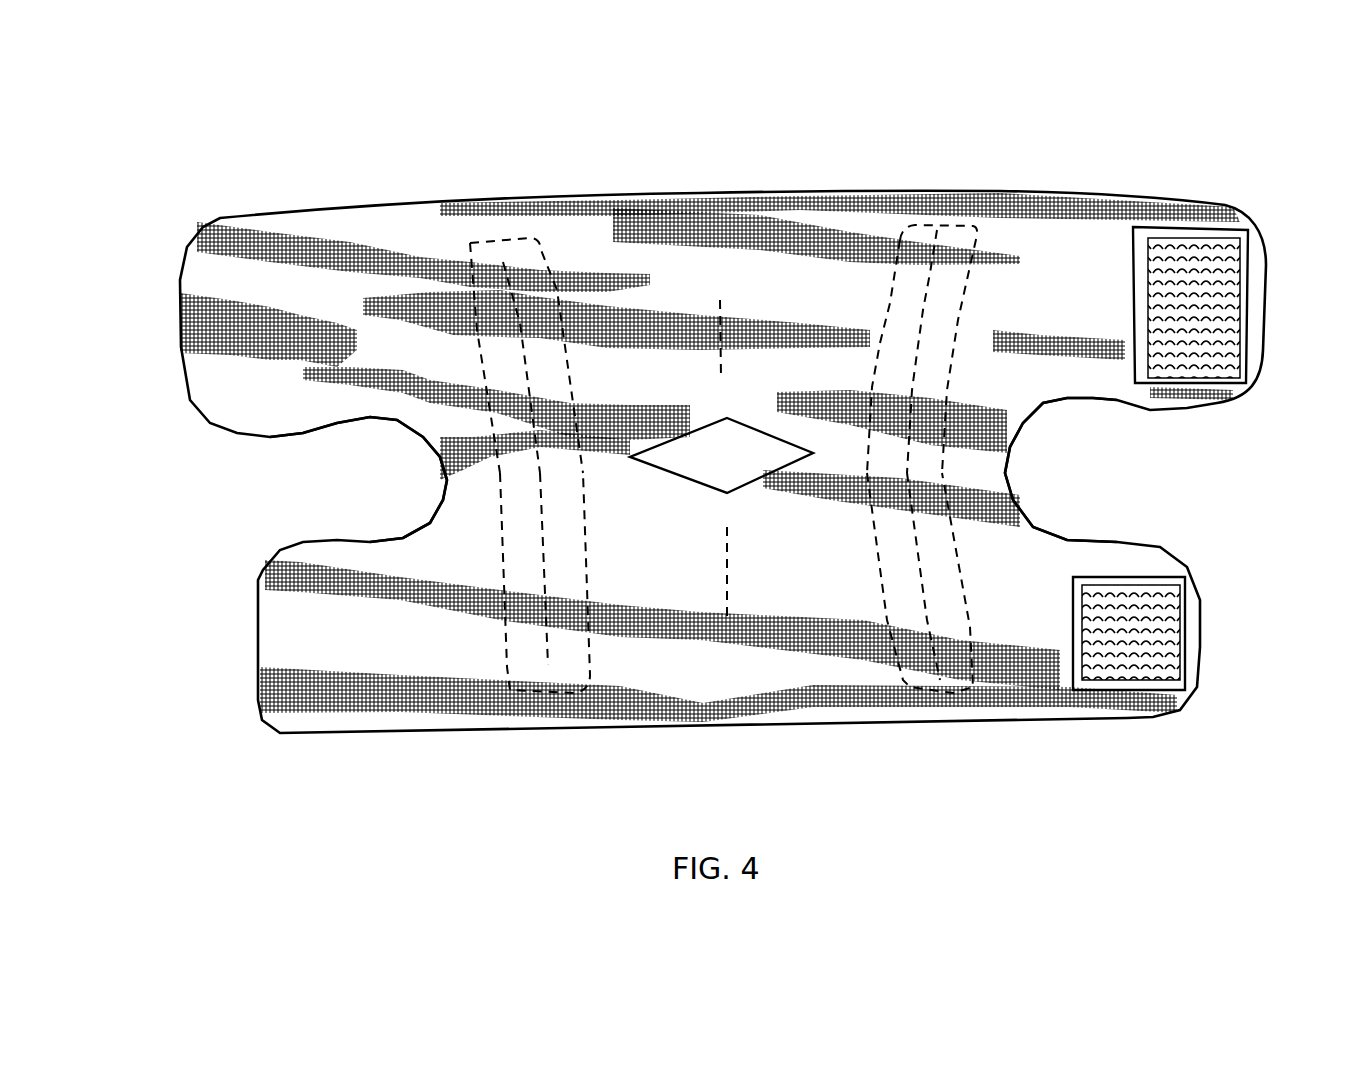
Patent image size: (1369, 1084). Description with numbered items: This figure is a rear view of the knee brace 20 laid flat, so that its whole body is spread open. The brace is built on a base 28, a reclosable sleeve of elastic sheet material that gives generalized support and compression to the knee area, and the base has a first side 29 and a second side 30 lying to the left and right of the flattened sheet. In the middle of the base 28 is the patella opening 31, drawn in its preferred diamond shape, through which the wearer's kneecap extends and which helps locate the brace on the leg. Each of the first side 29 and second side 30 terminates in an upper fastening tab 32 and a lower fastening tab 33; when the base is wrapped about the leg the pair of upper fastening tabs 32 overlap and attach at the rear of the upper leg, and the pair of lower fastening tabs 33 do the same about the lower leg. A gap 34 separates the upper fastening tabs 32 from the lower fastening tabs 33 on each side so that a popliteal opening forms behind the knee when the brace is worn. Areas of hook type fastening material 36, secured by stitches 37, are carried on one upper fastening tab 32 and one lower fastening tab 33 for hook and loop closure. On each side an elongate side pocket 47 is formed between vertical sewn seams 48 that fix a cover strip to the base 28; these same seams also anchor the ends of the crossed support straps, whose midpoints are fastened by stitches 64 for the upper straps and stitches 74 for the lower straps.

The knee brace 20 is at (324, 820).
The base 28 is at (708, 270).
The first side 29 is at (980, 353).
The second side 30 is at (470, 380).
The patella opening 31 is at (727, 418).
The upper fastening tabs 32 is at (200, 282).
The lower fastening tabs 33 is at (280, 643).
The gap 34 is at (447, 487).
The hook type fastening material 36 is at (1183, 277).
The stitches 37 is at (1237, 280).
The elongate side pocket 47 is at (547, 347).
The vertical sewn seams 48 is at (590, 663).
The stitches 64 is at (720, 322).
The stitches 74 is at (733, 600).